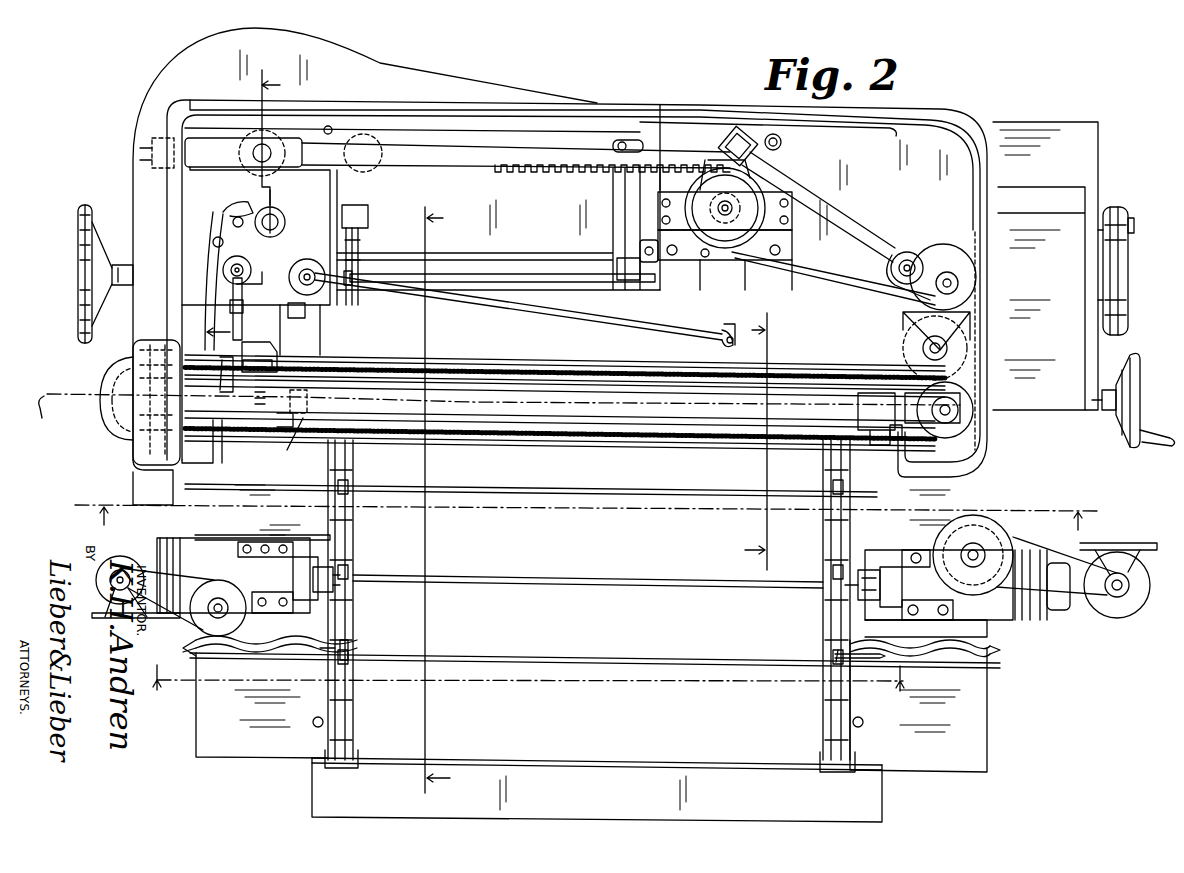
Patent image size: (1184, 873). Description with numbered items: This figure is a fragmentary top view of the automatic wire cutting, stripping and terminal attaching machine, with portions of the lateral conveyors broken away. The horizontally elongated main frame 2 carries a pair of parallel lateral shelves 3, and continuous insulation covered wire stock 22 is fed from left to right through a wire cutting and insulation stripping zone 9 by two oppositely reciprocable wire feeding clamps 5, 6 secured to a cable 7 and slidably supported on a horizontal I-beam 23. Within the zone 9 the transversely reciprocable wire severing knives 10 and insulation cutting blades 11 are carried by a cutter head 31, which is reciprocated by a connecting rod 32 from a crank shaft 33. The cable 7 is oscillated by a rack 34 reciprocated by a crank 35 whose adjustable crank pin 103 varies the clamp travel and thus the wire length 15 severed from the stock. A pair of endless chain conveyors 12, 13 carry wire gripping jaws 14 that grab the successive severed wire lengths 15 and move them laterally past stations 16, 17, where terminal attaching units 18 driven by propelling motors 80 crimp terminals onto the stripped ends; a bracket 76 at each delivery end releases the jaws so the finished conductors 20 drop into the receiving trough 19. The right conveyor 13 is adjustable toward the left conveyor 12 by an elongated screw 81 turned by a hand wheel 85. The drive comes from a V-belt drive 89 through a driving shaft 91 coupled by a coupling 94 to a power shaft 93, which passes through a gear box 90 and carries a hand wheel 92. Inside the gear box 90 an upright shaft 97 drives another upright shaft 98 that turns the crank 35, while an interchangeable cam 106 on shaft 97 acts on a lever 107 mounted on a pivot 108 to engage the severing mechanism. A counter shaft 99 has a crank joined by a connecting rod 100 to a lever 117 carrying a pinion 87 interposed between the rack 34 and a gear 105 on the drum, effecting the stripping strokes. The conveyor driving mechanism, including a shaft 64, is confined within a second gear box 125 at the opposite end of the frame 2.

The main frame 2 is at (540, 108).
The shelves 3 is at (590, 628).
The wire feeding clamp 5 is at (888, 442).
The wire feeding clamp 6 is at (258, 345).
The cable 7 is at (508, 372).
The wire cutting and insulation stripping zone 9 is at (521, 540).
The wire severing knives 10 is at (359, 500).
The insulation cutting blades 11 is at (320, 395).
The endless chain conveyor 12 is at (352, 642).
The endless chain conveyor 13 is at (825, 648).
The wire gripping jaws 14 is at (352, 540).
The wire length 15 is at (554, 478).
The station 16 is at (330, 595).
The station 17 is at (856, 570).
The terminal attaching unit 18 is at (165, 545).
The conductor receiving trough 19 is at (330, 790).
The finished electrical conductors 20 is at (585, 748).
The wire stock 22 is at (499, 409).
The I-beam 23 is at (632, 355).
The cutter head 31 is at (233, 350).
The connecting rod 32 is at (243, 296).
The crank shaft 33 is at (262, 258).
The rack 34 is at (590, 170).
The crank 35 is at (240, 140).
The shaft 64 is at (535, 240).
The bracket 76 is at (358, 760).
The propelling motor 80 is at (128, 565).
The screw 81 is at (1100, 399).
The hand wheel 85 is at (1120, 437).
The pinion 87 is at (706, 150).
The V-belt drive 89 is at (1118, 200).
The gear box 90 is at (320, 192).
The driving shaft 91 is at (585, 292).
The hand wheel 92 is at (80, 310).
The power shaft 93 is at (118, 265).
The coupling 94 is at (365, 306).
The upright shaft 97 is at (279, 222).
The upright shaft 98 is at (278, 142).
The counter shaft 99 is at (318, 256).
The connecting rod 100 is at (500, 310).
The crank pin 103 is at (140, 156).
The gear 105 is at (794, 212).
The cam 106 is at (287, 194).
The lever 107 is at (235, 197).
The pivot 108 is at (214, 240).
The lever 117 is at (718, 328).
The gear box 125 is at (1058, 177).